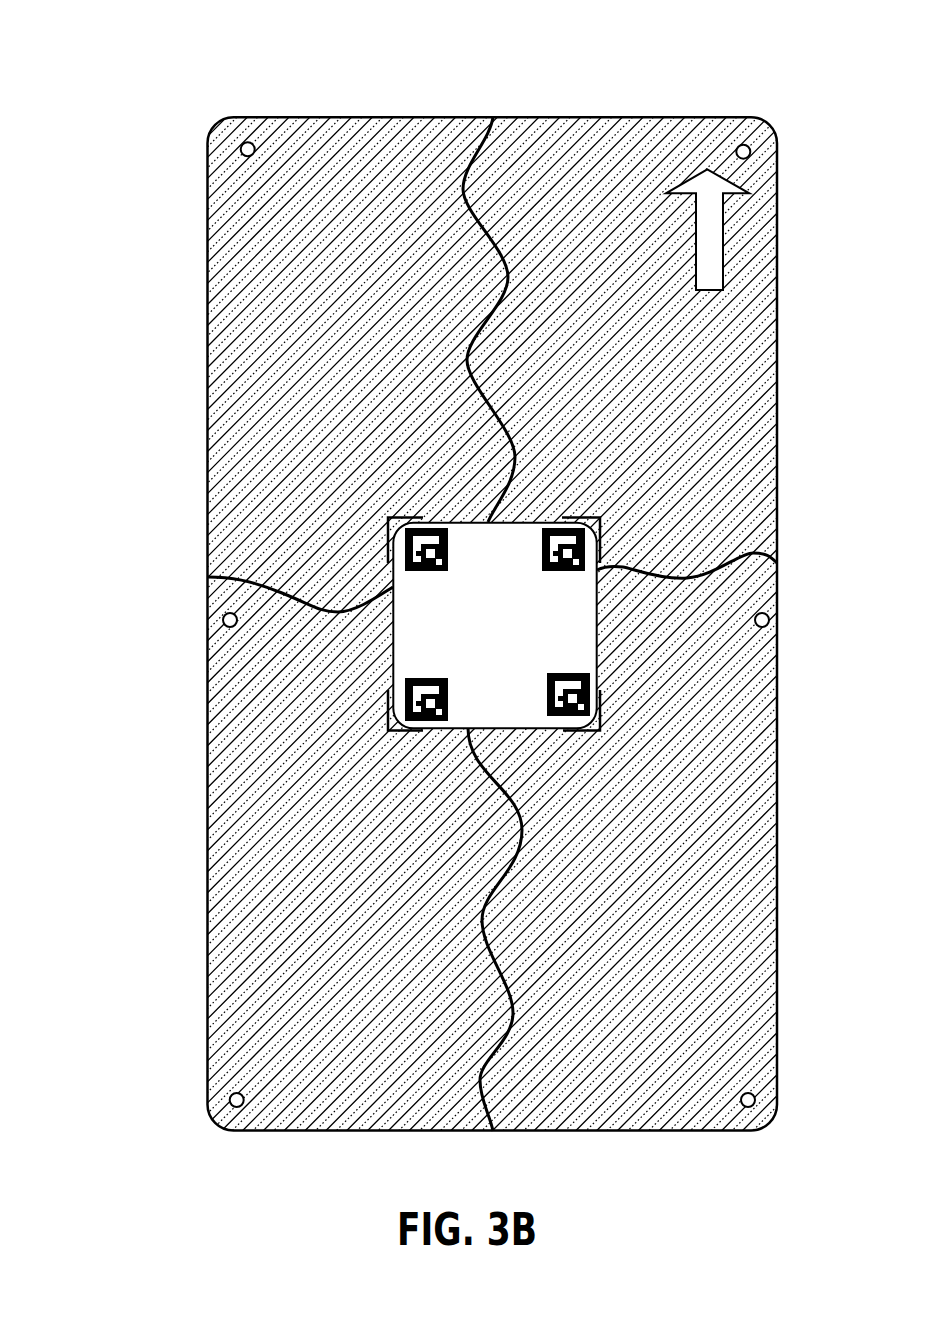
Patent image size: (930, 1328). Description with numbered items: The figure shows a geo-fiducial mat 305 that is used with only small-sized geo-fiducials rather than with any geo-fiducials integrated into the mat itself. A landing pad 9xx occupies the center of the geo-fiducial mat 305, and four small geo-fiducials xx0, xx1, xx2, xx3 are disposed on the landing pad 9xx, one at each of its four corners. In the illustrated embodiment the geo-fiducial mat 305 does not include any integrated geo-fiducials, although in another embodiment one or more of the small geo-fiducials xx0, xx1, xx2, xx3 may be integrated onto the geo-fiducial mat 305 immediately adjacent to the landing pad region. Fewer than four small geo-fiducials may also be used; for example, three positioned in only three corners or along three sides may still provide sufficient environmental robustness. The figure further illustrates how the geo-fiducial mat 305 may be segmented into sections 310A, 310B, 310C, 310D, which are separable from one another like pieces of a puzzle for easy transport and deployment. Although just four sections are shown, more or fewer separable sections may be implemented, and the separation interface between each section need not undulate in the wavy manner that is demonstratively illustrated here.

The geo-fiducial mat 305 is at (118, 60).
The section 310A is at (330, 371).
The section 310B is at (603, 368).
The section 310C is at (323, 886).
The section 310D is at (633, 884).
The landing pad 9xx is at (494, 624).
The small geo-fiducial xx0 is at (426, 686).
The small geo-fiducial xx1 is at (426, 565).
The small geo-fiducial xx2 is at (563, 565).
The small geo-fiducial xx3 is at (568, 682).